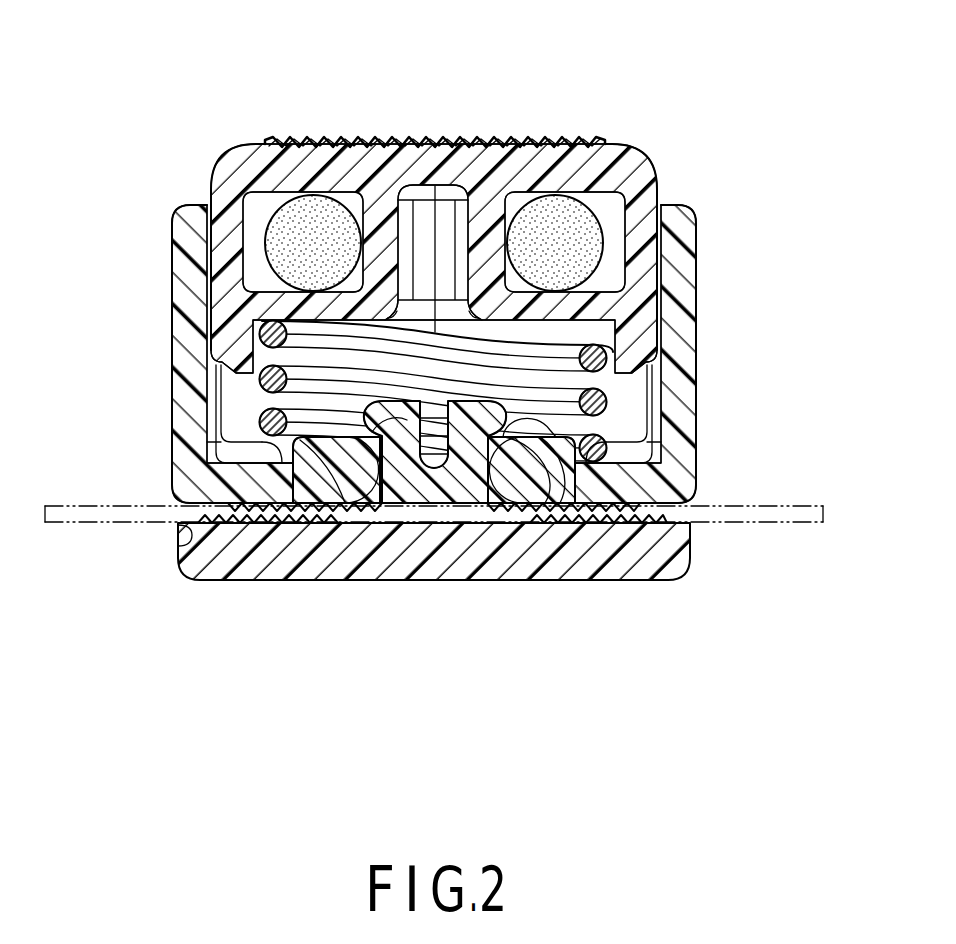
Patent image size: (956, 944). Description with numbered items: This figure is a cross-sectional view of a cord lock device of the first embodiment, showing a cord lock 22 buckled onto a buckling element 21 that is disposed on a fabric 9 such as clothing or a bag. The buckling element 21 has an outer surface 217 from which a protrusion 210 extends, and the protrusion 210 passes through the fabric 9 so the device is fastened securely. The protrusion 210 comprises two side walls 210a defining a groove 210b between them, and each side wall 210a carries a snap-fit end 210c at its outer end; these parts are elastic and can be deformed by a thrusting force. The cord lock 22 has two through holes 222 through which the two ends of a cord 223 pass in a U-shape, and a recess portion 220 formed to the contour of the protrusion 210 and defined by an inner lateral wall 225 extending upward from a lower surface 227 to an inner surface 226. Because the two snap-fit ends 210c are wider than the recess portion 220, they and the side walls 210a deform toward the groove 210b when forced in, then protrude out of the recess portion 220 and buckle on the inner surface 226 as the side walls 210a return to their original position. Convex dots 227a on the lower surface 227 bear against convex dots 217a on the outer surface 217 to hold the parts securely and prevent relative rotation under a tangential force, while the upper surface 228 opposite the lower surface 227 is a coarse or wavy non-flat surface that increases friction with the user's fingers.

The cord lock 22 is at (697, 378).
The upper surface 228 is at (297, 141).
The cord 223 is at (293, 260).
The through hole 222 is at (605, 272).
The lower surface 227 is at (207, 502).
The convex dots 227a is at (240, 443).
The protrusion 210 is at (410, 497).
The side walls 210a is at (470, 482).
The groove 210b is at (444, 478).
The snap-fit end 210c is at (377, 510).
The recess portion 220 is at (373, 493).
The inner lateral wall 225 is at (540, 480).
The inner surface 226 is at (573, 478).
The buckling element 21 is at (692, 558).
The outer surface 217 is at (178, 545).
The convex dots 217a is at (270, 430).
The fabric 9 is at (786, 518).